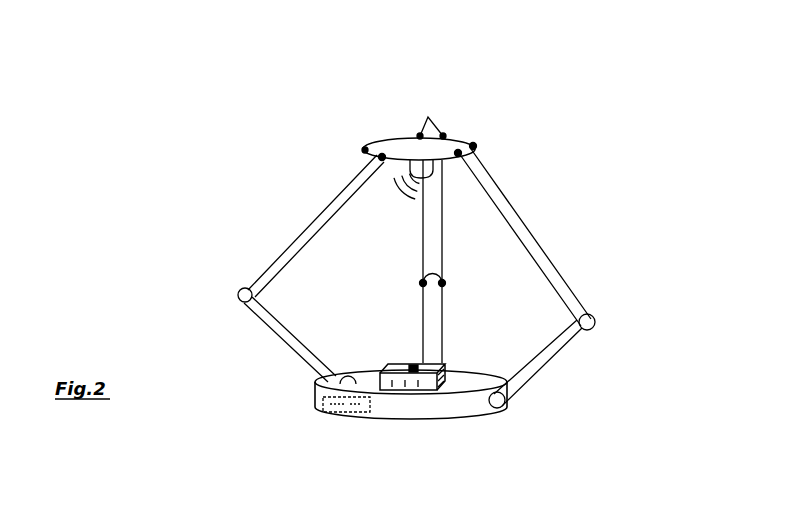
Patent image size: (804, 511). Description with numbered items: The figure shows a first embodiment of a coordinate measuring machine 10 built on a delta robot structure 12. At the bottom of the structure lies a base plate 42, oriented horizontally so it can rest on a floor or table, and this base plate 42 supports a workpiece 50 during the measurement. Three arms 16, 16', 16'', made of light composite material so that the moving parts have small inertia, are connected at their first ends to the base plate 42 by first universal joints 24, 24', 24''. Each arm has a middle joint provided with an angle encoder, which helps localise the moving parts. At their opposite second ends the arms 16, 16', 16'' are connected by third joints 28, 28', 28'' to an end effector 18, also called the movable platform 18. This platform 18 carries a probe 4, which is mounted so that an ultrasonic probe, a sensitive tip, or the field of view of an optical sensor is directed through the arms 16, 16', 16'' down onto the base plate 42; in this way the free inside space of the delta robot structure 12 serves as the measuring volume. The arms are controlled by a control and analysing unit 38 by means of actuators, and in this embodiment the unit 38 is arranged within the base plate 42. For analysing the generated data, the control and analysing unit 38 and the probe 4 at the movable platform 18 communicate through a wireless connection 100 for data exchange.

The measuring machine 10 is at (348, 138).
The delta robot structure 12 is at (380, 127).
The end effector 18 is at (455, 143).
The third joint 28' is at (431, 116).
The third joint 28'' is at (338, 147).
The third joint 28 is at (554, 135).
The probe 4 is at (442, 171).
The wireless connection 100 is at (397, 212).
The arm 16'' is at (310, 226).
The first universal joint 24'' is at (297, 355).
The arm 16' is at (397, 261).
The arm 16 is at (558, 237).
The first universal joint 24' is at (524, 364).
The first universal joint 24 is at (485, 394).
The base plate 42 is at (453, 408).
The control and analysing unit 38 is at (330, 410).
The workpiece 50 is at (390, 392).